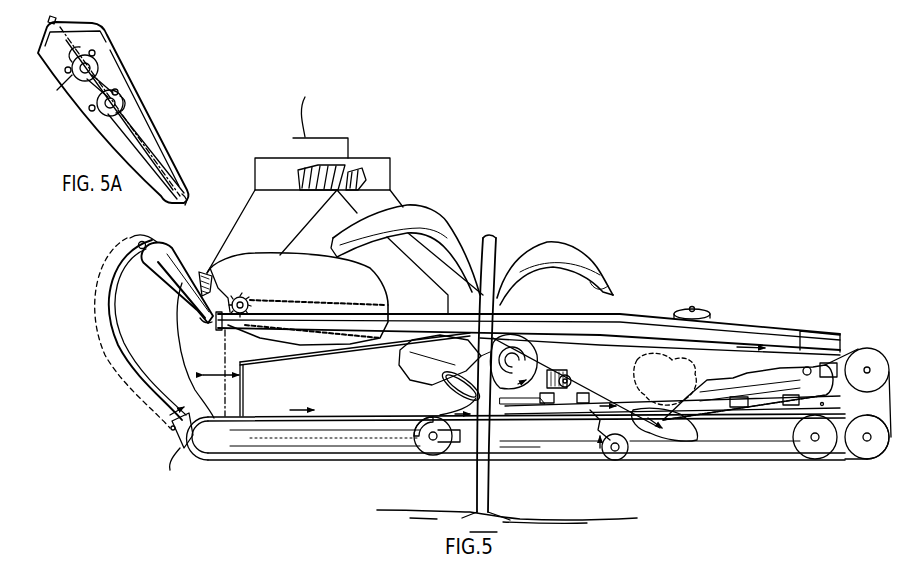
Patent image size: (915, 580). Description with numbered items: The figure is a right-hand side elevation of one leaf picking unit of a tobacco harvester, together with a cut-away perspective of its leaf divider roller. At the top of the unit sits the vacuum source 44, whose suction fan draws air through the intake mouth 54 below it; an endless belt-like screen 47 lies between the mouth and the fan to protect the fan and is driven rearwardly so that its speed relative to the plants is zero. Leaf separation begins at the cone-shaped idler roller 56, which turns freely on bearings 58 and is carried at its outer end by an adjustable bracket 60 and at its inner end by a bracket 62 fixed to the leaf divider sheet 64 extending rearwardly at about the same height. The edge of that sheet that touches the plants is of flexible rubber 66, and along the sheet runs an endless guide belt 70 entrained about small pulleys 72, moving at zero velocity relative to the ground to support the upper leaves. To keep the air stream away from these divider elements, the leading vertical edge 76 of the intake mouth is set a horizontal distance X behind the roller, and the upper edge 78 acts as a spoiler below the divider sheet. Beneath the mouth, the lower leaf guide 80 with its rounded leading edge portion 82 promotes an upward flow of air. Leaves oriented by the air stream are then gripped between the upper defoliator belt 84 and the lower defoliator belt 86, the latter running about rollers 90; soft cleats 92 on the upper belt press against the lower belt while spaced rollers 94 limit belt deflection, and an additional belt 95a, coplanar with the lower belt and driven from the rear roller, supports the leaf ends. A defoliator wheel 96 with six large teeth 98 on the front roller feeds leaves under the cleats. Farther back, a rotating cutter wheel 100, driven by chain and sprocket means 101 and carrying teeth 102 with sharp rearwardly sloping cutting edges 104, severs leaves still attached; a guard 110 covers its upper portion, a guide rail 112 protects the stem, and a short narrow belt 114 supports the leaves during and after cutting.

In FIG. 5, the vacuum source 44 is at (392, 175).
In FIG. 5, the endless belt-like screen 47 is at (262, 305).
In FIG. 5, the intake mouth 54 is at (333, 401).
In FIG. 5A, the cone-shaped idler roller 56 is at (112, 60).
In FIG. 5, the cone-shaped idler roller 56 is at (178, 248).
In FIG. 5A, the bearings 58 is at (90, 98).
In FIG. 5, the adjustable bracket 60 is at (120, 248).
In FIG. 5A, the bracket 62 is at (192, 197).
In FIG. 5, the bracket 62 is at (207, 323).
In FIG. 5, the leaf divider sheet 64 is at (203, 278).
In FIG. 5, the flexible rubber edge portion 66 is at (432, 322).
In FIG. 5, the endless guide belt 70 is at (640, 332).
In FIG. 5, the small pulleys 72 is at (828, 338).
In FIG. 5, the leading vertical edge 76 is at (244, 398).
In FIG. 5, the upper edge 78 is at (335, 348).
In FIG. 5, the lower leaf guide 80 is at (340, 448).
In FIG. 5, the leading edge portion 82 is at (258, 440).
In FIG. 5, the upper defoliator belt 84 is at (598, 396).
In FIG. 5, the lower defoliator belt 86 is at (425, 418).
In FIG. 5, the rollers 90 is at (818, 448).
In FIG. 5, the cleats 92 is at (455, 388).
In FIG. 5, the rollers 94 is at (572, 383).
In FIG. 5, the additional belt 95a is at (176, 440).
In FIG. 5, the defoliator wheel 96 is at (540, 358).
In FIG. 5, the teeth 98 is at (575, 381).
In FIG. 5, the rotating cutter wheel 100 is at (690, 425).
In FIG. 5, the chain and sprocket means 101 is at (750, 388).
In FIG. 5, the teeth 102 is at (672, 379).
In FIG. 5, the cutting edges 104 is at (660, 349).
In FIG. 5, the guard 110 is at (750, 377).
In FIG. 5, the guide rail 112 is at (548, 442).
In FIG. 5, the short narrow belt 114 is at (592, 440).